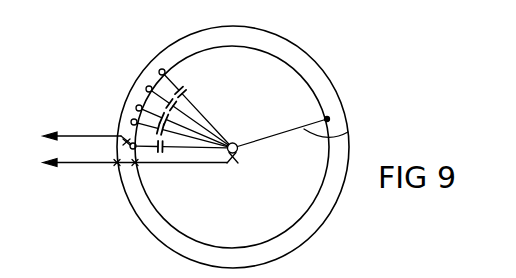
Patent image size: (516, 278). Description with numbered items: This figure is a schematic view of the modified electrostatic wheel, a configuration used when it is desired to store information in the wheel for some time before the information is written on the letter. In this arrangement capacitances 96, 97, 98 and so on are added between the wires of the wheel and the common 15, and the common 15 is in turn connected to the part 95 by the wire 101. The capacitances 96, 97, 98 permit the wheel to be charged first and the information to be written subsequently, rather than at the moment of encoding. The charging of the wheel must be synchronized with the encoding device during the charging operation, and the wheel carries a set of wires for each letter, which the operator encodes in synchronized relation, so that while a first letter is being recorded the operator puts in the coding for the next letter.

The part 95 is at (314, 64).
The capacitance 96 is at (183, 93).
The capacitance 97 is at (178, 104).
The capacitance 98 is at (172, 120).
The common 15 is at (238, 149).
The wire 101 is at (340, 132).